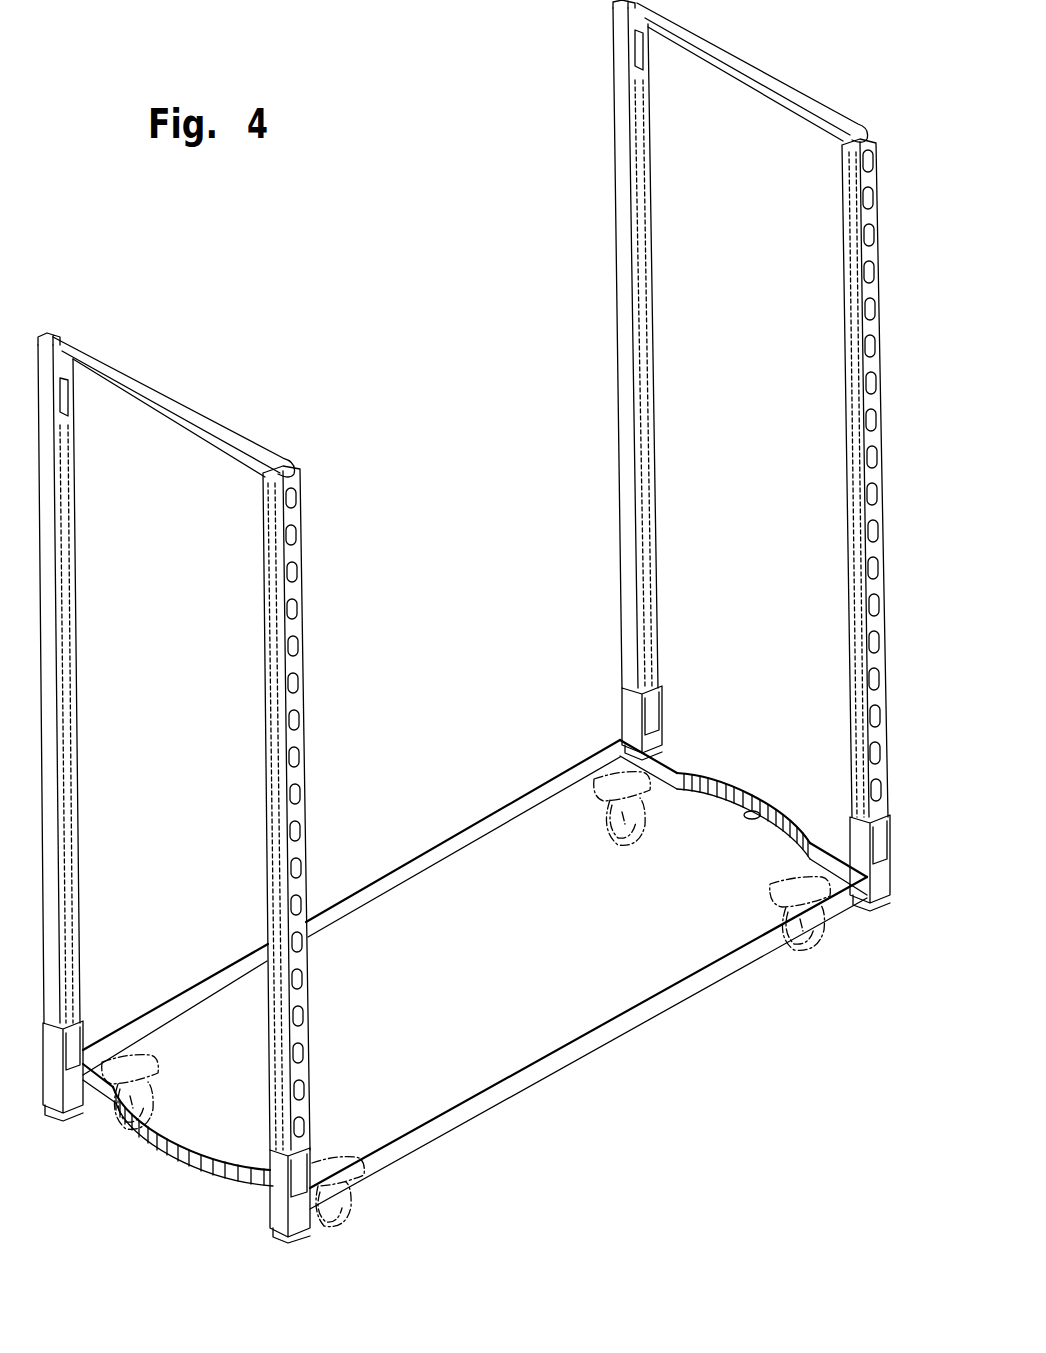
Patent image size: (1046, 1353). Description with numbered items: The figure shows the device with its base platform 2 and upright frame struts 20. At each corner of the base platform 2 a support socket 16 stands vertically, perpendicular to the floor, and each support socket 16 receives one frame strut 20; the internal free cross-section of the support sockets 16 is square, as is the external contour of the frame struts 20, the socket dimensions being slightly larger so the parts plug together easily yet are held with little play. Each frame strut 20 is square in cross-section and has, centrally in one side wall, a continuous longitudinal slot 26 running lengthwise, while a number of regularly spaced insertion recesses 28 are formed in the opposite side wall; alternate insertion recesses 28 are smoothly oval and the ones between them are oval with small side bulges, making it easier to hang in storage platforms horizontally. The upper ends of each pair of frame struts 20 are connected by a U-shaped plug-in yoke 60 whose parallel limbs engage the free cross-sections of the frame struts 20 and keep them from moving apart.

The base platform 2 is at (693, 992).
The support socket 16 is at (80, 1112).
The frame strut 20 is at (85, 739).
The longitudinal slot 26 is at (66, 492).
The insertion recesses 28 is at (284, 530).
The plug-in yoke 60 is at (162, 398).